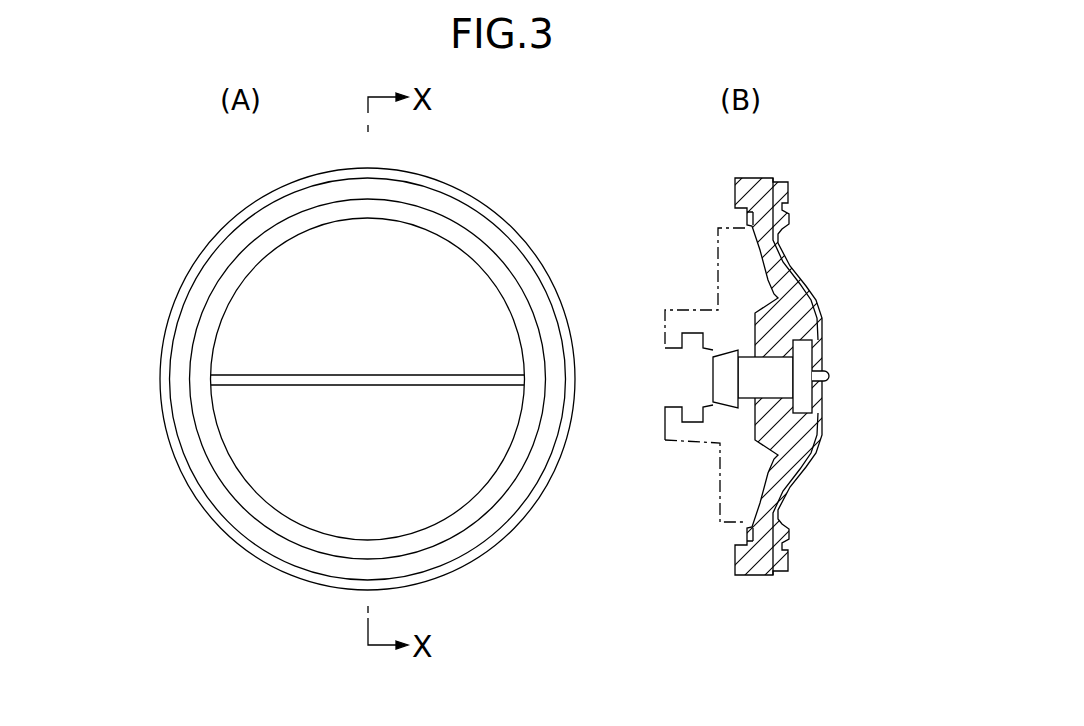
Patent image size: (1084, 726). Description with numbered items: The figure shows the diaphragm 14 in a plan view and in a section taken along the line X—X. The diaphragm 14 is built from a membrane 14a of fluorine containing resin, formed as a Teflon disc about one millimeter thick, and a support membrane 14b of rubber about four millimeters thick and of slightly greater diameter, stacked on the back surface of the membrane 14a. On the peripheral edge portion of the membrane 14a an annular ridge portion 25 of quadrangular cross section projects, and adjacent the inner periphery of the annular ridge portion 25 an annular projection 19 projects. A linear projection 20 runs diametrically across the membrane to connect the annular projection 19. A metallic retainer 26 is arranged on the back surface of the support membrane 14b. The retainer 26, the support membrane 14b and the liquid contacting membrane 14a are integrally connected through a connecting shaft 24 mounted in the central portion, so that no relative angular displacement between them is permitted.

In FIG. 3A, the diaphragm 14 is at (252, 188).
In FIG. 3B, the diaphragm 14 is at (774, 166).
In FIG. 3A, the membrane 14a is at (310, 198).
In FIG. 3B, the membrane 14a is at (807, 280).
In FIG. 3A, the support membrane 14b is at (210, 242).
In FIG. 3B, the support membrane 14b is at (770, 268).
In FIG. 3A, the annular projection 19 is at (483, 262).
In FIG. 3B, the annular projection 19 is at (787, 223).
In FIG. 3A, the linear projection 20 is at (390, 375).
In FIG. 3B, the linear projection 20 is at (830, 377).
In FIG. 3A, the connecting shaft 24 is at (452, 212).
In FIG. 3B, the connecting shaft 24 is at (756, 396).
In FIG. 3B, the annular ridge portion 25 is at (787, 188).
In FIG. 3B, the retainer 26 is at (737, 493).